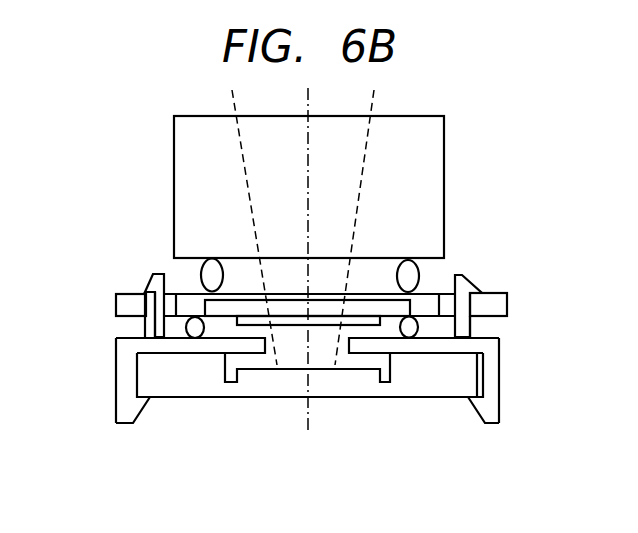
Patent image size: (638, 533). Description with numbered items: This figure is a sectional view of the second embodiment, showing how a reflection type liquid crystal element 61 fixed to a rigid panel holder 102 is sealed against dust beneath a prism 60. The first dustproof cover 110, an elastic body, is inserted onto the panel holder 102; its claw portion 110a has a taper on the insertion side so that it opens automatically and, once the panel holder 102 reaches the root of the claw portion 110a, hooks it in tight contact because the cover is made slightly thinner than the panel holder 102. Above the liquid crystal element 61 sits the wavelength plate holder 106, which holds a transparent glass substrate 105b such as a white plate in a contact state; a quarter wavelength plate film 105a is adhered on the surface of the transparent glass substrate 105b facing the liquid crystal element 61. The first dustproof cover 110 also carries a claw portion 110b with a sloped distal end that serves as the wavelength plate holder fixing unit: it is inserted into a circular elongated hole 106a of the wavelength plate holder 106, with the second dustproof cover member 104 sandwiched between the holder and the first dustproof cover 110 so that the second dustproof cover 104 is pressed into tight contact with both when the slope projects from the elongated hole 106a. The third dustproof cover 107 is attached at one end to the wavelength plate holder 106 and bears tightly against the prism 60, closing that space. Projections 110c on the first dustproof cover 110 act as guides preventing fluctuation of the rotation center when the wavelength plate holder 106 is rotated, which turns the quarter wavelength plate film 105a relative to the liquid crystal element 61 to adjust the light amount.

The prism 60 is at (185, 225).
The reflection type liquid crystal element 61 is at (345, 377).
The panel holder 102 is at (190, 377).
The second dustproof cover member 104 is at (410, 338).
The quarter wavelength plate film 105a is at (365, 324).
The transparent glass substrate 105b is at (287, 305).
The wavelength plate holder 106 is at (508, 303).
The circular elongated hole 106a is at (446, 300).
The third dustproof cover 107 is at (407, 262).
The first dustproof cover 110 is at (500, 394).
The claw portion 110a is at (494, 365).
The claw portion 110b is at (147, 285).
The projections 110c is at (153, 323).